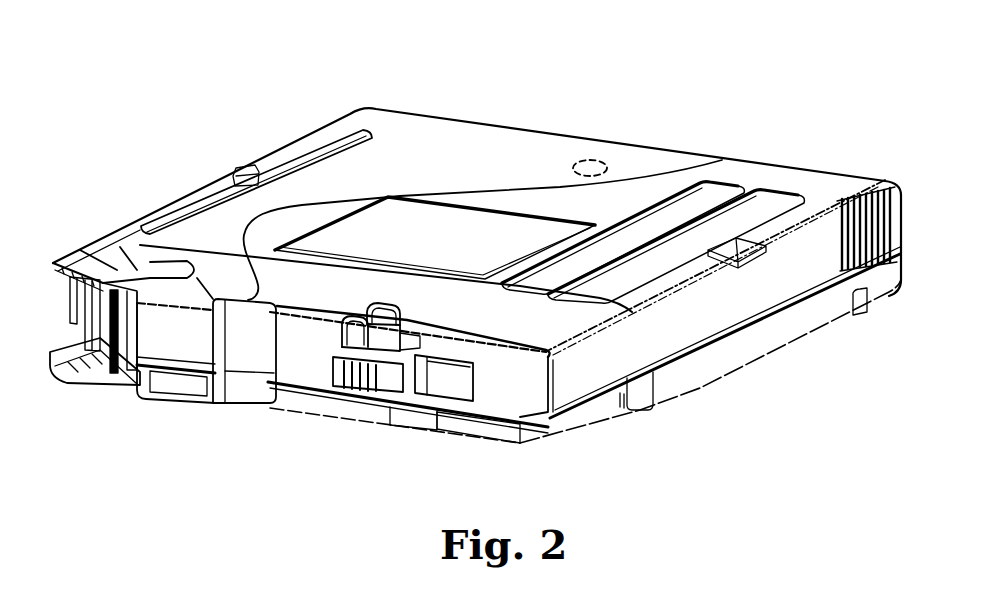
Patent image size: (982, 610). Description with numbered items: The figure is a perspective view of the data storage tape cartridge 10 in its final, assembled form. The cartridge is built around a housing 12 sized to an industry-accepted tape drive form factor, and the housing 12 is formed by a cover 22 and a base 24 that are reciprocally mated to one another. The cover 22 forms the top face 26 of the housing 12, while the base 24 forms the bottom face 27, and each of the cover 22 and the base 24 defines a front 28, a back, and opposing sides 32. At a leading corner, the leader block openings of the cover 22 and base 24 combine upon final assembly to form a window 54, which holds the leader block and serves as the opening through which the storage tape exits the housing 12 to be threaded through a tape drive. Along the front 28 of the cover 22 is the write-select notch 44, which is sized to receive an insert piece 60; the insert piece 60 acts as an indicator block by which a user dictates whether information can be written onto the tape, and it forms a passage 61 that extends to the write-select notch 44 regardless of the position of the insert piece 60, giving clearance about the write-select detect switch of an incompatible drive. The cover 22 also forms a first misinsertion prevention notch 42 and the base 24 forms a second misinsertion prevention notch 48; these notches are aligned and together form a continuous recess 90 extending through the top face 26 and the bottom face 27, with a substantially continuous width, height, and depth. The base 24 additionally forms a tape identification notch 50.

The data storage tape cartridge 10 is at (457, 248).
The housing 12 is at (233, 156).
The cover 22 is at (482, 142).
The base 24 is at (776, 341).
The top face 26 is at (660, 166).
The bottom face 27 is at (377, 424).
The front 28 is at (327, 401).
The opposing sides 32 is at (150, 212).
The first misinsertion prevention notch 42 is at (264, 365).
The write-select notch 44 is at (440, 324).
The second misinsertion prevention notch 48 is at (241, 362).
The tape identification notch 50 is at (637, 400).
The window 54 is at (68, 327).
The insert piece 60 is at (400, 306).
The passage 61 is at (453, 380).
The continuous recess 90 is at (234, 380).